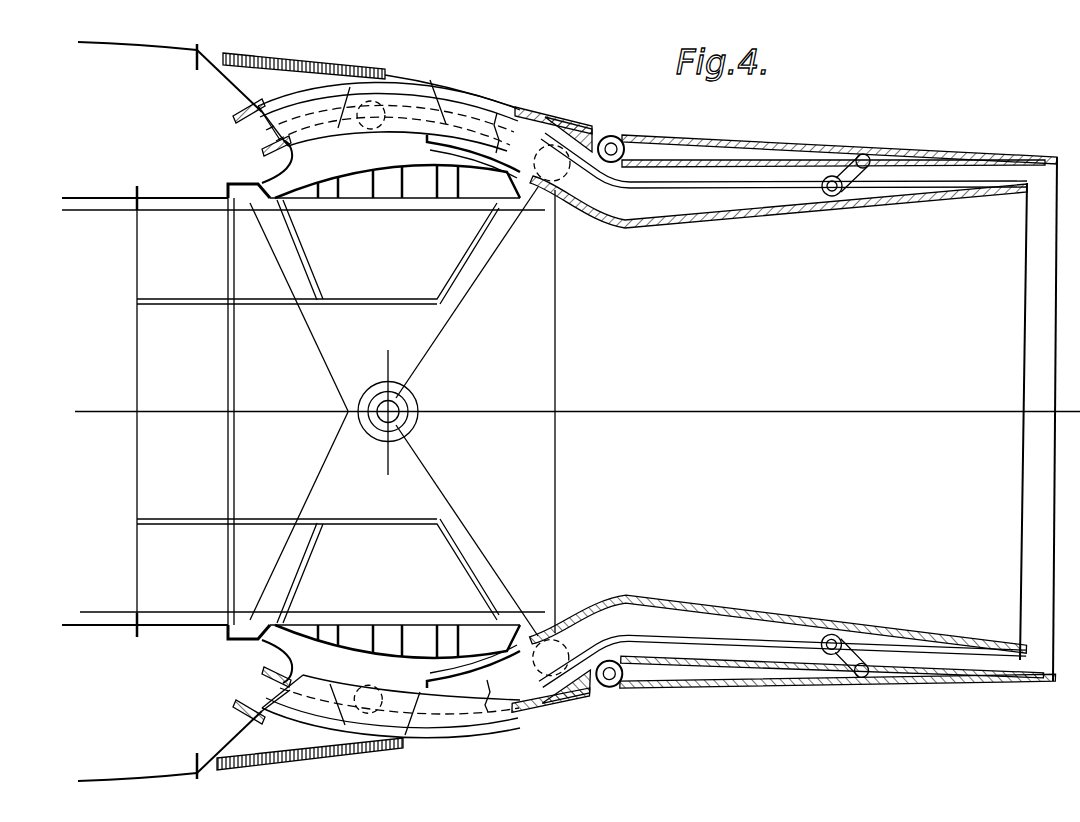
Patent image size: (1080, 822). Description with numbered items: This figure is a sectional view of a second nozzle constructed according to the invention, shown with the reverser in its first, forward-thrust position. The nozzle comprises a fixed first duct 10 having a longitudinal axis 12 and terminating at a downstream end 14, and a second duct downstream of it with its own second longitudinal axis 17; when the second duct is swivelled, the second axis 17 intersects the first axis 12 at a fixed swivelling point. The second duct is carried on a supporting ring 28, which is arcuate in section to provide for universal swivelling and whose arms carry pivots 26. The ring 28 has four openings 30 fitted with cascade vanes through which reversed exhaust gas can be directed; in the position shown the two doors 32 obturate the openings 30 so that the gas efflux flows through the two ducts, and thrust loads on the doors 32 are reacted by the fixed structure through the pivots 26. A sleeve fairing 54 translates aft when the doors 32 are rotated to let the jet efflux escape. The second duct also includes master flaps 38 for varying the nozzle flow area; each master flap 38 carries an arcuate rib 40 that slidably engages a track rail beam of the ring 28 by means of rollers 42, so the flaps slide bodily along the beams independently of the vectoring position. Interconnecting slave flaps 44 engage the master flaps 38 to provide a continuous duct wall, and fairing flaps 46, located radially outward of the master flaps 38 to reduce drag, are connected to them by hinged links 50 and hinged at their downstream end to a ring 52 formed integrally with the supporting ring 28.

The fixed first duct 10 is at (98, 196).
The longitudinal axis 12 is at (93, 407).
The downstream end 14 is at (262, 174).
The second longitudinal axis 17 is at (799, 410).
The pivots 26 is at (393, 408).
The supporting ring 28 is at (313, 88).
The openings 30 is at (252, 103).
The doors 32 is at (478, 205).
The master flaps 38 is at (728, 217).
The arcuate rib 40 is at (338, 141).
The rollers 42 is at (384, 78).
The slave flaps 44 is at (663, 207).
The fairing flaps 46 is at (781, 152).
The hinged links 50 is at (848, 170).
The ring 52 is at (553, 125).
The sleeve fairing 54 is at (336, 66).